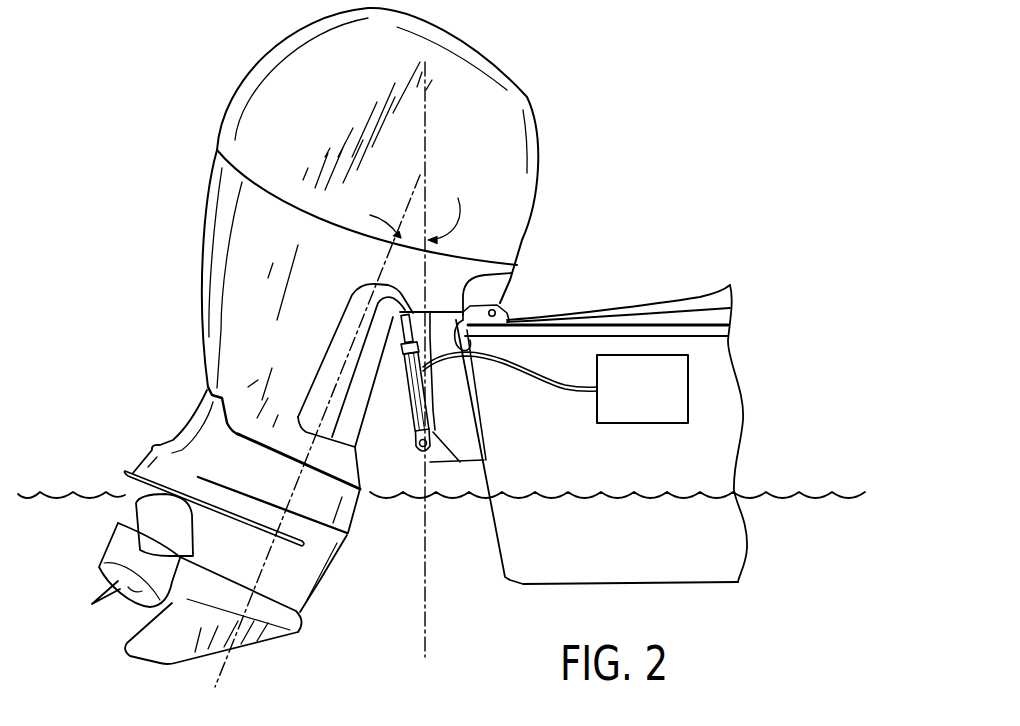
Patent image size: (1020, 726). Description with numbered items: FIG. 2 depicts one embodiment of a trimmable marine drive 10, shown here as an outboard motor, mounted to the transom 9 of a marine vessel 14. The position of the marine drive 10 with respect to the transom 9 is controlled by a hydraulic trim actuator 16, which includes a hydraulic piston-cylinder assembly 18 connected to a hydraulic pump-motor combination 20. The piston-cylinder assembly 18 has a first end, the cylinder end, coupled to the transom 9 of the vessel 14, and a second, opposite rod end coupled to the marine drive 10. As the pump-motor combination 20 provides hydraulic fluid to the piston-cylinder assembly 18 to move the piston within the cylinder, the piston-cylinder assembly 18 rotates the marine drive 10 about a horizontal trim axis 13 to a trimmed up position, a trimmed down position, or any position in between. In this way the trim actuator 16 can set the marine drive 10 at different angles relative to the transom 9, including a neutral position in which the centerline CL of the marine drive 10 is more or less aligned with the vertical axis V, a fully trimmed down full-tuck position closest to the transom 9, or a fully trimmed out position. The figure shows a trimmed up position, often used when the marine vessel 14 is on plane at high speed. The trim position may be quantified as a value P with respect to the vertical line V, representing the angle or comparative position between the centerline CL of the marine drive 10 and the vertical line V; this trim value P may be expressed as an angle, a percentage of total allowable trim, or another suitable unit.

The trimmable marine drive 10 is at (462, 43).
The horizontal trim axis 13 is at (512, 273).
The marine vessel 14 is at (722, 403).
The hydraulic trim actuator 16 is at (569, 405).
The hydraulic piston-cylinder assembly 18 is at (407, 398).
The hydraulic pump-motor combination 20 is at (655, 402).
The transom 9 is at (502, 557).
The trim value P is at (418, 206).
The vertical axis V is at (423, 610).
The centerline of the marine drive CL is at (220, 667).